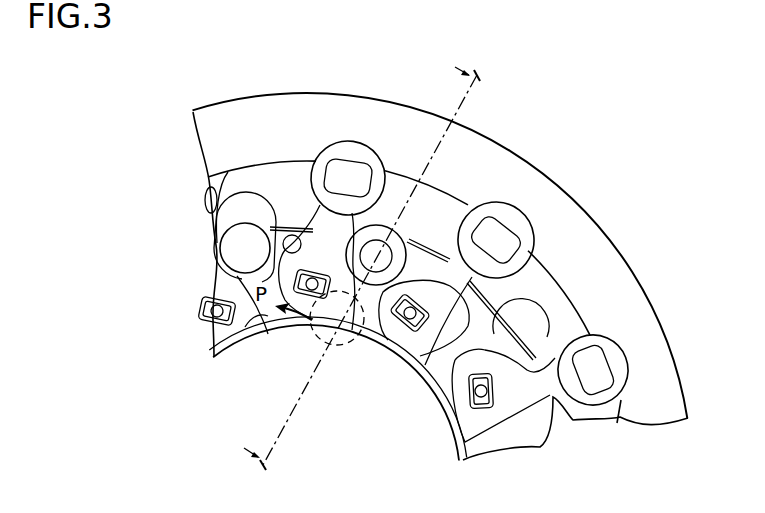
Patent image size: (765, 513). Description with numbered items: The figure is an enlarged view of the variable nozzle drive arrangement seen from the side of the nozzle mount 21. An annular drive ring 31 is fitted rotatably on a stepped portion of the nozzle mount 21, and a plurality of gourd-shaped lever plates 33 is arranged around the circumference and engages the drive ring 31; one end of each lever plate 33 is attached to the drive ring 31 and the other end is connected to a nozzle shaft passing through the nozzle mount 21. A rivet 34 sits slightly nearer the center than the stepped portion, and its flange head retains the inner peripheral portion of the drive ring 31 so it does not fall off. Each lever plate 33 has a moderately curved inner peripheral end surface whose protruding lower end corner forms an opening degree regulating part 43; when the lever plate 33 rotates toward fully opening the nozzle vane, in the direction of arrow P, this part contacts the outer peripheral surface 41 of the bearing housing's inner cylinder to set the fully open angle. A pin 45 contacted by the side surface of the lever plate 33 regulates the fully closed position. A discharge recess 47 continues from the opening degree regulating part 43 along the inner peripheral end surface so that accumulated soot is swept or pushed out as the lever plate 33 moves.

The nozzle mount 21 is at (620, 272).
The drive ring 31 is at (265, 168).
The lever plate 33 is at (337, 146).
The rivet 34 is at (410, 240).
The outer peripheral surface of the inner cylinder of the bearing housing 41 is at (247, 328).
The opening degree regulating part 43 is at (347, 330).
The pin 45 is at (290, 227).
The discharge recess 47 is at (410, 343).